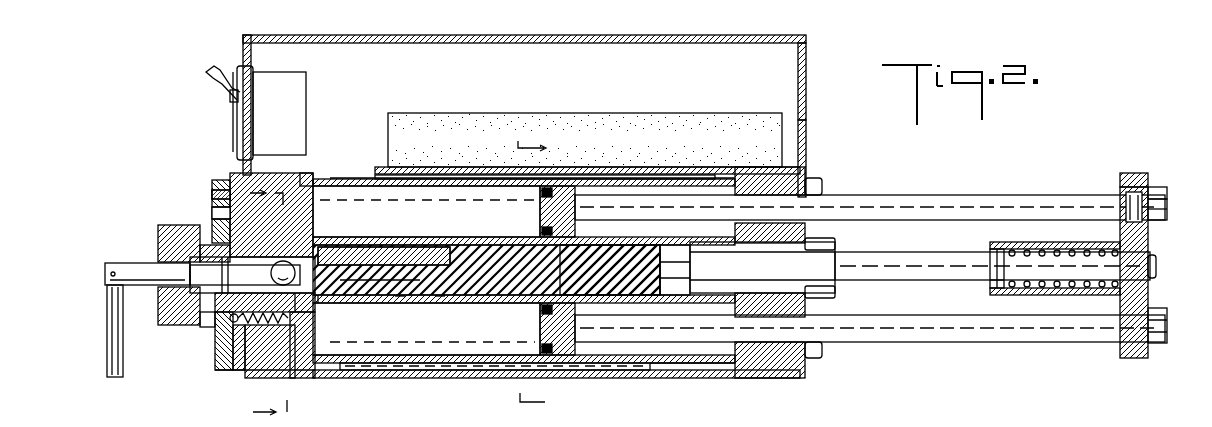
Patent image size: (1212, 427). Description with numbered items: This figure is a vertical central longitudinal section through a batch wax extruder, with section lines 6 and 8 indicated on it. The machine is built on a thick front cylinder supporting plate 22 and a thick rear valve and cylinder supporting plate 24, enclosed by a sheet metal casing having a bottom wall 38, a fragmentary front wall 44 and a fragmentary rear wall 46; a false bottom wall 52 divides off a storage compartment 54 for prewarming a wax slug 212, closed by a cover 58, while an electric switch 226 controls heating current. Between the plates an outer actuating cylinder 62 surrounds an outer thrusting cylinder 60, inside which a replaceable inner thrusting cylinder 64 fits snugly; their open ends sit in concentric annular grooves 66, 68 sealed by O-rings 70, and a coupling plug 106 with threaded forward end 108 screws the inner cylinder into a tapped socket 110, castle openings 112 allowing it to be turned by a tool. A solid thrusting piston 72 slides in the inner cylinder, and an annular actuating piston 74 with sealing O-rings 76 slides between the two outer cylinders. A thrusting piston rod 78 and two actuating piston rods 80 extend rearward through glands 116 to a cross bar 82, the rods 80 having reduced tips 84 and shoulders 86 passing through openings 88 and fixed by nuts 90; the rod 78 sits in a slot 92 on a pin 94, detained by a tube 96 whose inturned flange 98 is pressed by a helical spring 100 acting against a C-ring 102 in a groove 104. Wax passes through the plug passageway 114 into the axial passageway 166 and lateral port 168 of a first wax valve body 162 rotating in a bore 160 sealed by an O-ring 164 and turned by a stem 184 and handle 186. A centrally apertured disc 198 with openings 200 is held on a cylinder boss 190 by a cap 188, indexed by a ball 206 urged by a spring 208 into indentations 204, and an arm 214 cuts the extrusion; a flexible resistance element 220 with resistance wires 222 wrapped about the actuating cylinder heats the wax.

The sheet metal cover 58 is at (686, 35).
The storage compartment 54 is at (806, 86).
The fragmentary rear wall 46 is at (806, 130).
The fragmentary front wall 44 is at (254, 63).
The electric switch 226 is at (214, 94).
The false bottom wall 52 is at (692, 165).
The wax slug 212 is at (613, 117).
The section line 8- 8 is at (543, 268).
The section line 6- 6 is at (268, 302).
The outer actuating cylinder 62 is at (404, 190).
The actuating piston 74 is at (541, 210).
The sealing O-rings 76 is at (542, 200).
The actuating piston rods 80 is at (951, 198).
The outer thrusting cylinder 60 is at (438, 244).
The inner thrusting cylinder 64 is at (498, 244).
The tapped socket 110 is at (346, 248).
The thrusting piston 72 is at (658, 272).
The annular groove 66 is at (744, 258).
The thrusting piston rod 78 is at (925, 258).
The O-rings 70 is at (322, 346).
The resistance wires 222 is at (632, 371).
The flexible resistance element 220 is at (715, 377).
The bottom wall 38 is at (428, 378).
The annular groove 68 is at (756, 166).
The rear valve and cylinder supporting plate 24 is at (805, 372).
The glands 116 is at (812, 180).
The castle openings 112 is at (836, 240).
The cross bar 82 is at (1150, 235).
The openings 88 is at (1134, 173).
The shoulders 86 is at (1124, 178).
The reduced tips 84 is at (1162, 188).
The nuts 90 is at (1168, 202).
The slot 92 is at (1158, 264).
The pin 94 is at (1160, 305).
The tube 96 is at (1050, 246).
The helical spring 100 is at (1040, 296).
The inturned flange 98 is at (1112, 246).
The groove 104 is at (990, 258).
The C-ring 102 is at (990, 286).
The centrally apertured disc 198 is at (215, 180).
The openings 200 is at (212, 194).
The indentations 204 is at (212, 214).
The cap 188 is at (177, 326).
The stem 184 is at (135, 262).
The handle 186 is at (108, 372).
The O-ring 164 is at (230, 270).
The first cylindrical wax valve body 162 is at (275, 262).
The bore 160 is at (265, 302).
The port 168 is at (287, 302).
The ball 206 is at (259, 331).
The spring 208 is at (277, 345).
The arm 214 is at (212, 322).
The cylinder boss 190 is at (205, 322).
The front cylinder supporting plate 22 is at (238, 372).
The passageway 166 is at (340, 303).
The forward end 108 is at (356, 303).
The coupling plug 106 is at (400, 303).
The passageway 114 is at (440, 303).